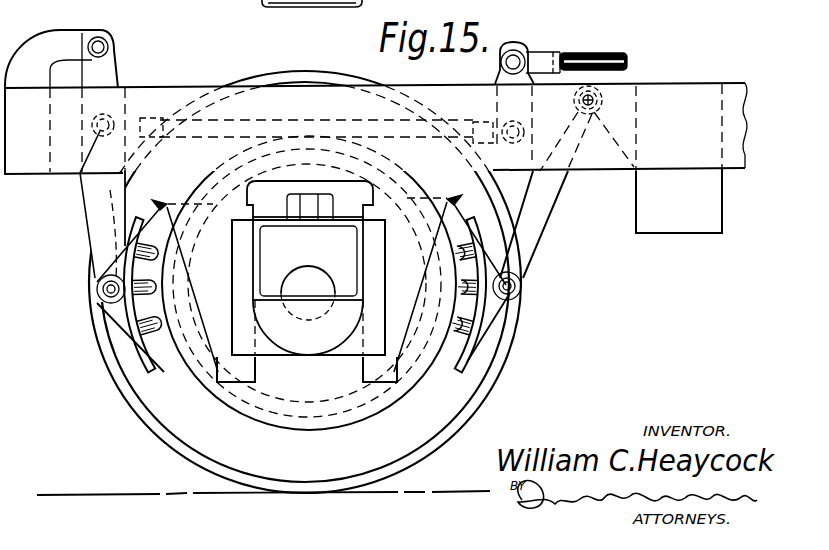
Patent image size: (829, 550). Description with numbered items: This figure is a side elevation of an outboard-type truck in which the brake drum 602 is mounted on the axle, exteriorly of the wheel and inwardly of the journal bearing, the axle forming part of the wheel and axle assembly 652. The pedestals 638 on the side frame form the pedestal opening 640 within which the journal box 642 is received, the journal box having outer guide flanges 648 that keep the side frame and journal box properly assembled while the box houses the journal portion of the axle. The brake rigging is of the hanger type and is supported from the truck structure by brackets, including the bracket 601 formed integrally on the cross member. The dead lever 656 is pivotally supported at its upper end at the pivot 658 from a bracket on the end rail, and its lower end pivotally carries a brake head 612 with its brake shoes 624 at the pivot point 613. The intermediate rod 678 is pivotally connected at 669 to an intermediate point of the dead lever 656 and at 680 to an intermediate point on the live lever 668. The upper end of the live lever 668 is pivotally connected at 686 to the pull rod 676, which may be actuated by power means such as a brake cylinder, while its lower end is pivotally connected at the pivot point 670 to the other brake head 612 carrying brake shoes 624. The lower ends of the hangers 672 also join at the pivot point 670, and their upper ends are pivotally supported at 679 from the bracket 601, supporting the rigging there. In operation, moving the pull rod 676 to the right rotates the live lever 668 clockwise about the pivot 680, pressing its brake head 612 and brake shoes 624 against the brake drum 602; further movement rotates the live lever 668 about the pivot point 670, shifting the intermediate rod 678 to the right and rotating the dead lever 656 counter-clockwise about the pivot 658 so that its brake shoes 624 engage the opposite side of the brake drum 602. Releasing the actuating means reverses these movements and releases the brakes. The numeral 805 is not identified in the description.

The bracket 601 is at (376, 158).
The brake drum 602 is at (309, 305).
The brake head 612 is at (313, 332).
The pivot point 613 is at (79, 290).
The brake shoes 624 is at (318, 334).
The pedestals 638 is at (301, 326).
The pedestal opening 640 is at (264, 188).
The journal box 642 is at (308, 308).
The outer guide flanges 648 is at (307, 285).
The wheel and axle assembly 652 is at (263, 512).
The dead lever 656 is at (94, 101).
The pivot 658 is at (135, 35).
The live lever 668 is at (305, 282).
The pivot 669 is at (66, 208).
The pivot point 670 is at (547, 289).
The hangers 672 is at (555, 224).
The pull rod 676 is at (628, 55).
The intermediate rod 678 is at (316, 116).
The pivot 679 is at (615, 128).
The pivot 680 is at (480, 116).
The pivot 686 is at (548, 88).
The support arm 805 is at (72, 24).